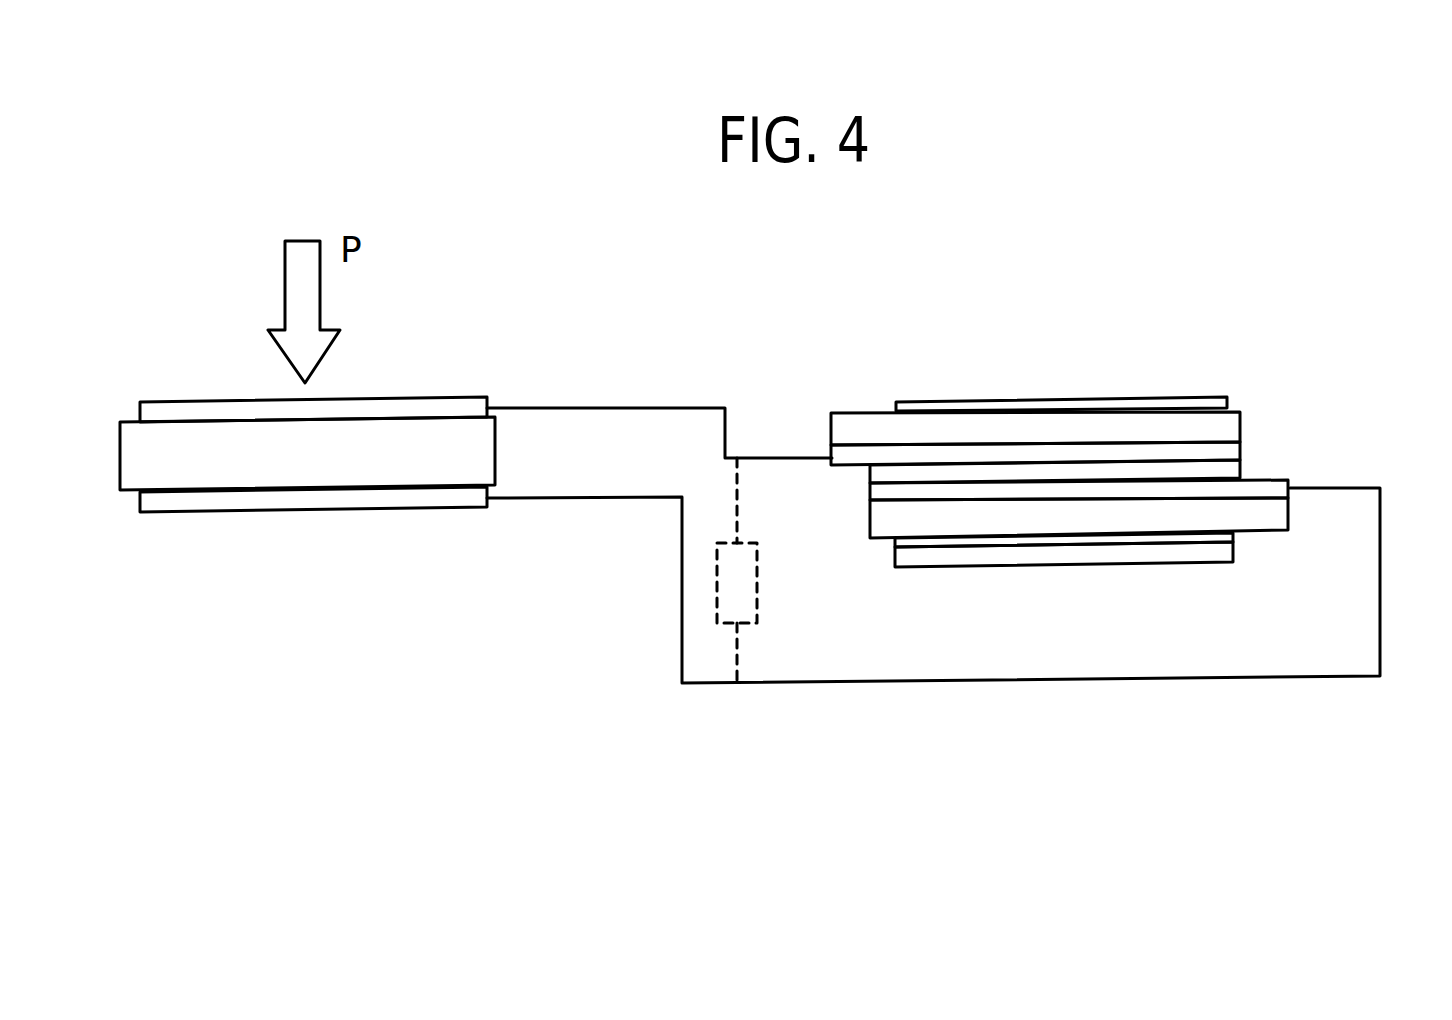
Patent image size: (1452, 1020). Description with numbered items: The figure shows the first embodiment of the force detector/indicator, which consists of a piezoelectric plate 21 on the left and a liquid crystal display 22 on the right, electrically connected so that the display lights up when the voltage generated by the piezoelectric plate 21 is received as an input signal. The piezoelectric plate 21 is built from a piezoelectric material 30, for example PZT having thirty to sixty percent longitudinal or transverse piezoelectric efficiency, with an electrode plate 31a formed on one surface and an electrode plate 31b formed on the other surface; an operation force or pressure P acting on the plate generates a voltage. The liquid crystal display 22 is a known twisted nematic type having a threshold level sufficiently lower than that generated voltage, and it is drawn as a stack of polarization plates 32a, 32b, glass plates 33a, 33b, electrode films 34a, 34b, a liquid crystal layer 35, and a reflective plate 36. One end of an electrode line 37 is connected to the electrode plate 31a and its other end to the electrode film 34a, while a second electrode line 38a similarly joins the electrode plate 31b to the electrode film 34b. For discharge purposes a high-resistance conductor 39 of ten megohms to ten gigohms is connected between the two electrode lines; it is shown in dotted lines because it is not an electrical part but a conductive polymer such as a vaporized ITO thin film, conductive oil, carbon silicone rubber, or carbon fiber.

The piezoelectric plate 21 is at (367, 388).
The liquid crystal display 22 is at (975, 393).
The piezoelectric material 30 is at (353, 474).
The electrode plate 31a is at (218, 353).
The electrode plate 31b is at (230, 512).
The polarization plate 32a is at (1152, 397).
The polarization plate 32b is at (1200, 540).
The glass plate 33a is at (1243, 428).
The glass plate 33b is at (1270, 517).
The electrode film 34a is at (1243, 450).
The electrode film 34b is at (1285, 482).
The liquid crystal layer 35 is at (1243, 470).
The reflective plate 36 is at (1075, 553).
The electrode line 37 is at (637, 368).
The lead wire 38a is at (918, 683).
The high-resistance conductor 39 is at (717, 572).